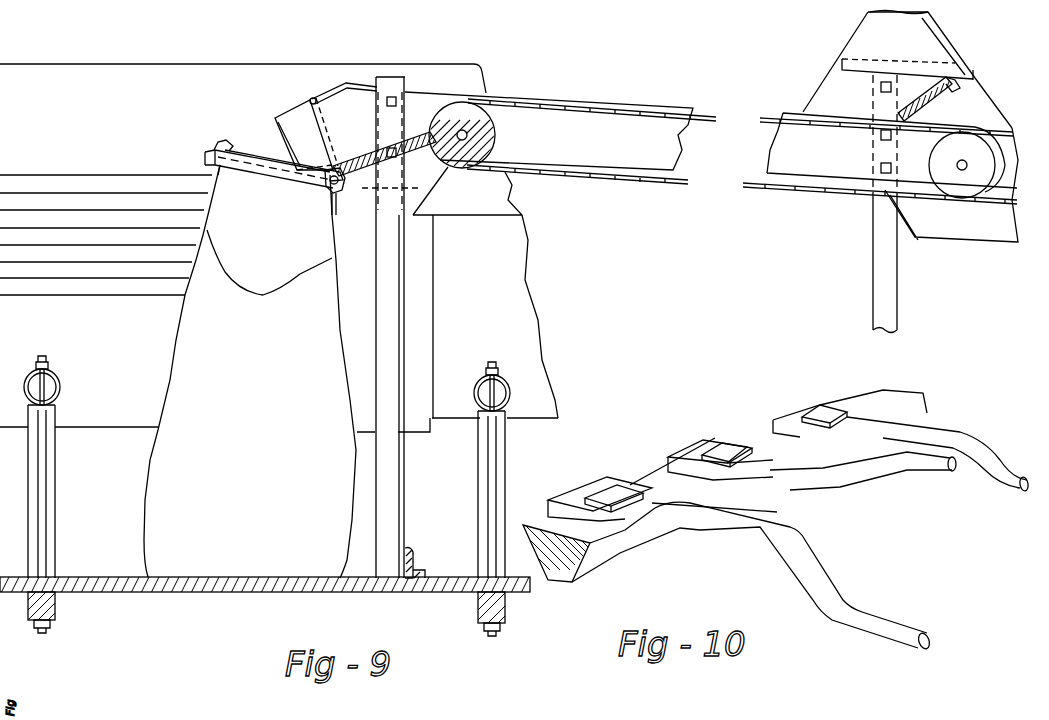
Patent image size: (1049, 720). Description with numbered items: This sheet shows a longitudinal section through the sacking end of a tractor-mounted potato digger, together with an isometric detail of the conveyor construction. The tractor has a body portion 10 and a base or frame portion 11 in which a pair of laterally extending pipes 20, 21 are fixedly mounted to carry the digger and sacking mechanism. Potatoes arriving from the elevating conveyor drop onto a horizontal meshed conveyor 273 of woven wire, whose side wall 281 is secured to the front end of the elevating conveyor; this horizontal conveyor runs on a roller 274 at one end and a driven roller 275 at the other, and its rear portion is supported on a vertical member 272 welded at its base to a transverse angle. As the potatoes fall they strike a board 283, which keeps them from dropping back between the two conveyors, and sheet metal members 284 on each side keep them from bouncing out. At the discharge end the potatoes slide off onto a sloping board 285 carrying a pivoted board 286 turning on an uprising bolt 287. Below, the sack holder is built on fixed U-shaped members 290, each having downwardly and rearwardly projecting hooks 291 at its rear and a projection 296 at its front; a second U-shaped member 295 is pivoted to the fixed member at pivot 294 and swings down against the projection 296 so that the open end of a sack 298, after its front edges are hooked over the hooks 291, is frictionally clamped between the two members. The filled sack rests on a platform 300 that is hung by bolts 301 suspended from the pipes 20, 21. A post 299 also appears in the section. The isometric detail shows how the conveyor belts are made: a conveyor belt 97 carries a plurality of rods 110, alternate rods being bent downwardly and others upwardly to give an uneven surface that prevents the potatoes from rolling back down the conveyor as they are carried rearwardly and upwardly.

In FIG. 9, the body portion of tractor 10 is at (77, 72).
In FIG. 9, the base portion or frame portion 11 is at (118, 426).
In FIG. 9, the pipe 20 is at (61, 387).
In FIG. 9, the pipe 21 is at (511, 393).
In FIG. 10, the conveyor belt 97 is at (770, 433).
In FIG. 10, the rod 110 is at (970, 433).
In FIG. 9, the vertical member 272 is at (874, 277).
In FIG. 9, the horizontal meshed conveyor 273 is at (661, 183).
In FIG. 9, the roller 274 is at (972, 191).
In FIG. 9, the driven roller 275 is at (497, 137).
In FIG. 9, the side wall 281 is at (549, 131).
In FIG. 9, the board 283 is at (928, 106).
In FIG. 9, the sheet metal member 284 is at (907, 70).
In FIG. 9, the sloping board 285 is at (349, 153).
In FIG. 9, the pivoted board 286 is at (275, 116).
In FIG. 9, the uprising bolt 287 is at (306, 100).
In FIG. 9, the U-shaped member 290 is at (298, 186).
In FIG. 9, the hook 291 is at (328, 187).
In FIG. 9, the pivot 294 is at (318, 167).
In FIG. 9, the pivoted U-shaped member 295 is at (253, 172).
In FIG. 9, the projection 296 is at (220, 172).
In FIG. 9, the sack 298 is at (250, 371).
In FIG. 9, the post 299 is at (404, 490).
In FIG. 9, the platform 300 is at (182, 593).
In FIG. 9, the bolt 301 is at (48, 631).